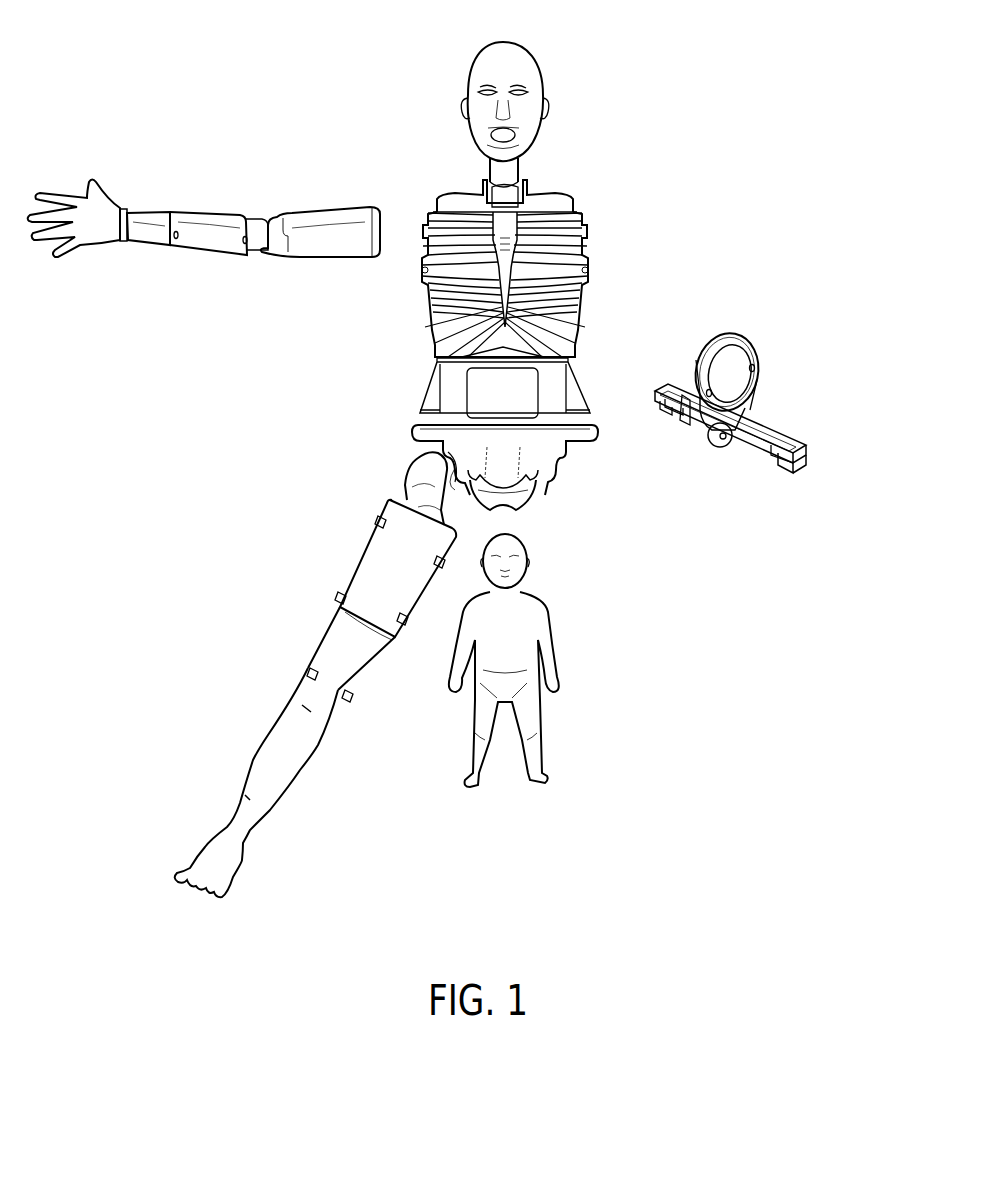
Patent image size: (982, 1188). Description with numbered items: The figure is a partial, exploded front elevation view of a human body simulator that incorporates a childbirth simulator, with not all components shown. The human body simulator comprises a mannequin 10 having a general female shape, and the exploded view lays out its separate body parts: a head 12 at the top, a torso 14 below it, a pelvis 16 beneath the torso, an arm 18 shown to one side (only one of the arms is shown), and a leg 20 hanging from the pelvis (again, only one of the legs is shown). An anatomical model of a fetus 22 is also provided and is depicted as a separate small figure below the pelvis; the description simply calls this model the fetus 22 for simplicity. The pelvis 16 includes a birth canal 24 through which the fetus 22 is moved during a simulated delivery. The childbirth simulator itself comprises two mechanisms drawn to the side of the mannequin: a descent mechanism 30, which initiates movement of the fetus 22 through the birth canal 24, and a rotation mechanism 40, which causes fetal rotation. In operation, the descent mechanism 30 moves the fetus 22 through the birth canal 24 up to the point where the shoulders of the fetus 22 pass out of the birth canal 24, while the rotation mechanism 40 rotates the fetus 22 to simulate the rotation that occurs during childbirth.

The mannequin 10 is at (630, 267).
The head 12 is at (537, 60).
The torso 14 is at (430, 295).
The pelvis 16 is at (418, 432).
The arm 18 is at (305, 214).
The leg 20 is at (357, 568).
The fetus 22 is at (548, 628).
The birth canal 24 is at (535, 505).
The descent mechanism 30 is at (765, 430).
The rotation mechanism 40 is at (757, 355).